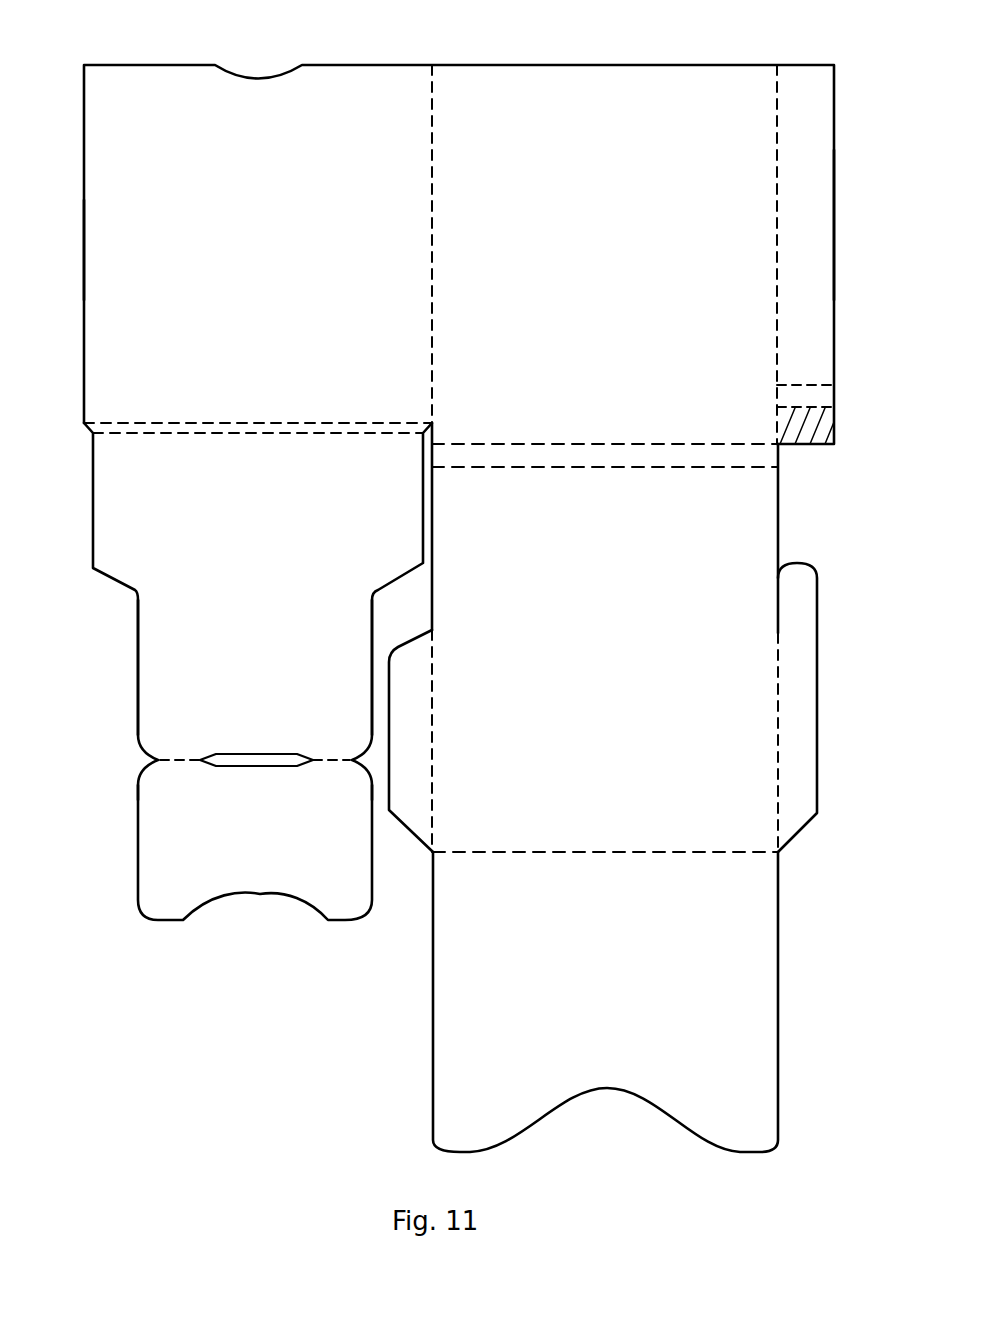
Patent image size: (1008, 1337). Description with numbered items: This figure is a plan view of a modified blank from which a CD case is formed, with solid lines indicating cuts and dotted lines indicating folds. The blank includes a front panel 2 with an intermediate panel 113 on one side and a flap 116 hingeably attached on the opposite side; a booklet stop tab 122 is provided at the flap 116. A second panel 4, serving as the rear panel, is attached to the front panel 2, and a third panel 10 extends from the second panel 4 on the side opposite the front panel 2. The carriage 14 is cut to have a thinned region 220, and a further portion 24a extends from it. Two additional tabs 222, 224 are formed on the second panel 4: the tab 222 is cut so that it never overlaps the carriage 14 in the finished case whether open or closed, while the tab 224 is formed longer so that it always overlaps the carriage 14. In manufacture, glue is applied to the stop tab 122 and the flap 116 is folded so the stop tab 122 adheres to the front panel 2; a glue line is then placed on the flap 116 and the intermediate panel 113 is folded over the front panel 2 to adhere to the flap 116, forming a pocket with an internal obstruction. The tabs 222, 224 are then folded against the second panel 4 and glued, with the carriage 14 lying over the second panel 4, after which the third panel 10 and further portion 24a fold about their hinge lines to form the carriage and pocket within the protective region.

The front panel 2 is at (587, 78).
The intermediate panel 113 is at (110, 327).
The flap 116 is at (836, 195).
The booklet stop tab 122 is at (805, 445).
The carriage 14 is at (112, 527).
The thinned region 220 is at (134, 673).
The further portion 24a is at (163, 885).
The tab 222 is at (413, 655).
The second panel 4 is at (735, 545).
The tab 224 is at (818, 733).
The third panel 10 is at (433, 1005).